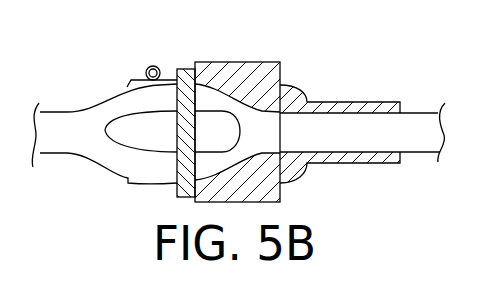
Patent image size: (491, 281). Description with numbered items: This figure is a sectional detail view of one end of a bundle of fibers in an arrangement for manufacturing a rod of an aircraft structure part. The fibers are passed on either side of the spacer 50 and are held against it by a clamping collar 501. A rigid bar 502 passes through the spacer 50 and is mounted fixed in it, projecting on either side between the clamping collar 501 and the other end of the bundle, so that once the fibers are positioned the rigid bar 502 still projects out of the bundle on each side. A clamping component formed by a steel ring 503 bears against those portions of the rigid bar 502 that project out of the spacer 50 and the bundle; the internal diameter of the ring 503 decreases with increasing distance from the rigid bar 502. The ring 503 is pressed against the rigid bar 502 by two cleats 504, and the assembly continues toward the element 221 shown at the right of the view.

The spacer 50 is at (130, 130).
The clamping collar 501 is at (143, 77).
The rigid bar 502 is at (190, 73).
The steel ring 503 is at (248, 75).
The cleats 504 is at (295, 93).
The tube 221 is at (410, 130).